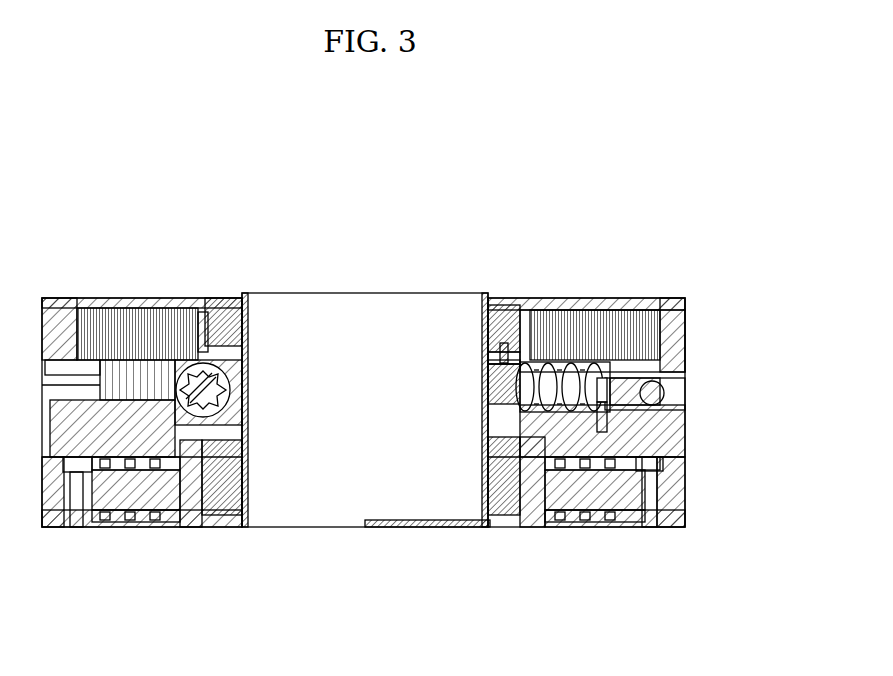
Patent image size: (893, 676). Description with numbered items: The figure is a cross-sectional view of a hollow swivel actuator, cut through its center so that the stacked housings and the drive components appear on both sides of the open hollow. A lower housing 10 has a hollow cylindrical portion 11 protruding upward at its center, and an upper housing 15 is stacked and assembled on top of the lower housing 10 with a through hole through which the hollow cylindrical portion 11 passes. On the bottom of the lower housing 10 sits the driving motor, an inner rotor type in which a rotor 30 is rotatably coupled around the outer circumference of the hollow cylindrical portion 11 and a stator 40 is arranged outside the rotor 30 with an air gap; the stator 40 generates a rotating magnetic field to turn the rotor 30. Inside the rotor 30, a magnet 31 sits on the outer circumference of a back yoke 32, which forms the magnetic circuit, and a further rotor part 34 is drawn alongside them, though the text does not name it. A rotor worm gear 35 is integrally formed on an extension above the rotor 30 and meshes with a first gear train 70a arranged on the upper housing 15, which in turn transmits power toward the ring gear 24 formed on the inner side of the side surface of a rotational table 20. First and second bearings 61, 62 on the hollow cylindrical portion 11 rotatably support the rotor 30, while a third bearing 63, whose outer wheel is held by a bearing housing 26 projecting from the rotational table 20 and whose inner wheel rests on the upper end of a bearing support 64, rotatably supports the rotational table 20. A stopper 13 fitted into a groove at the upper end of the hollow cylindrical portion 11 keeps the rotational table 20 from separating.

The lower housing 10 is at (685, 488).
The hollow cylindrical portion 11 is at (250, 452).
The stopper 13 is at (498, 298).
The upper housing 15 is at (685, 437).
The rotational table 20 is at (685, 330).
The ring gear 24 is at (640, 298).
The bearing housing 26 is at (230, 298).
The rotor 30 is at (498, 597).
The magnet 31 is at (560, 527).
The back yoke 32 is at (538, 527).
The inner ring 34 is at (523, 527).
The rotor worm gear 35 is at (477, 390).
The stator 40 is at (145, 527).
The first bearing 61 is at (460, 527).
The second bearing 62 is at (432, 523).
The third bearing 63 is at (477, 330).
The bearing support 64 is at (250, 377).
The first gear train 70a is at (543, 298).